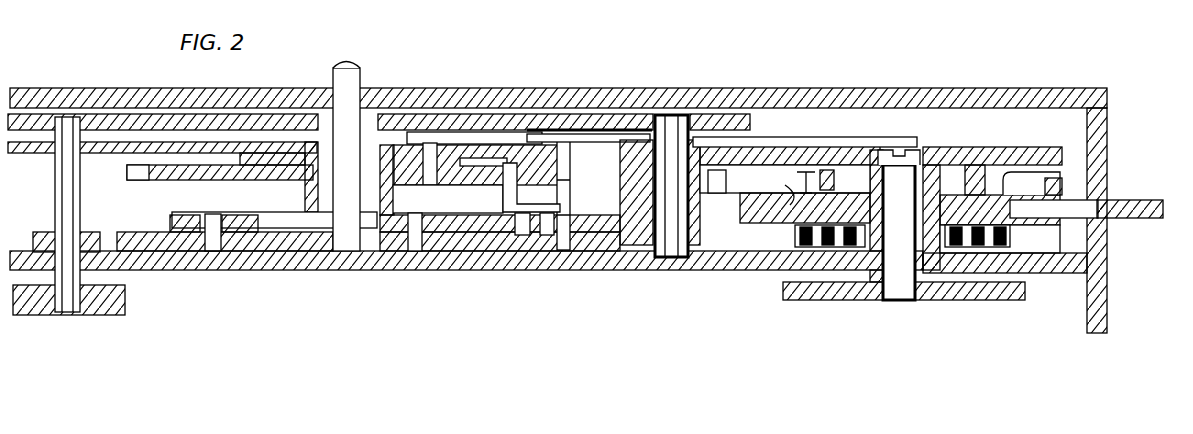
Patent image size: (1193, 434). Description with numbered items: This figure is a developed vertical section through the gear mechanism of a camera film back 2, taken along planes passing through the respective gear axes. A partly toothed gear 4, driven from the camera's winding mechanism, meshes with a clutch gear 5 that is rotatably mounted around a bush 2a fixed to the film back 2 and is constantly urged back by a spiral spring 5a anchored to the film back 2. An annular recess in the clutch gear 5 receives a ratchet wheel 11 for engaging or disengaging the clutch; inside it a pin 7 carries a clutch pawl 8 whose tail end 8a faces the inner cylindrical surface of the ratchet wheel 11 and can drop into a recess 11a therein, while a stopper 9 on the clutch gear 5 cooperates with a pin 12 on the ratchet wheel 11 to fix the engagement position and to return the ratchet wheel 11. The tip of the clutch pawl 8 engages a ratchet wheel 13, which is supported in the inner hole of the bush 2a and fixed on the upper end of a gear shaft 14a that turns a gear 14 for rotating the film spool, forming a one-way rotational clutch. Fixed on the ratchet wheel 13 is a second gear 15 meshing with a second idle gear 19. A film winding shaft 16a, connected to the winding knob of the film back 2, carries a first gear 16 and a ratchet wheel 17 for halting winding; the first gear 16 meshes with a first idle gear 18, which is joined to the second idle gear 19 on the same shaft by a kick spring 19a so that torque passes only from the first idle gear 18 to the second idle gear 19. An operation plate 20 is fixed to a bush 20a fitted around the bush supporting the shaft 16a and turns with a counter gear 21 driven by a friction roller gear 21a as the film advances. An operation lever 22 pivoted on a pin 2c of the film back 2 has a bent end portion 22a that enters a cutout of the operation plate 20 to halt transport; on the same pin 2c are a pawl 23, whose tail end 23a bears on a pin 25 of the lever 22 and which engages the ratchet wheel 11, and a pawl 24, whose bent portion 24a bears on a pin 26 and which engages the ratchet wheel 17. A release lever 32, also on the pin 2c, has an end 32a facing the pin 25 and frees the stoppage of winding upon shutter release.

The film back 2 is at (1102, 261).
The bush 2a is at (873, 283).
The pin 2c is at (617, 225).
The partly toothed gear 4 is at (1133, 200).
The clutch gear 5 is at (1058, 217).
The spiral spring 5a is at (1010, 242).
The pin 7 is at (806, 170).
The clutch pawl 8 is at (836, 170).
The tail end 8a is at (790, 203).
The stopper 9 is at (1031, 172).
The ratchet wheel 11 is at (1106, 160).
The recess 11a is at (780, 250).
The pin 12 is at (1077, 177).
The ratchet wheel 13 is at (975, 168).
The gear 14 is at (950, 299).
The gear shaft 14a is at (897, 283).
The second gear 15 is at (1015, 150).
The first gear 16 is at (147, 256).
The film winding shaft 16a is at (326, 111).
The ratchet wheel 17 is at (197, 256).
The first idle gear 18 is at (728, 257).
The second idle gear 19 is at (733, 147).
The kick spring 19a is at (699, 258).
The operation plate 20 is at (184, 180).
The bush 20a is at (137, 180).
The counter gear 21 is at (186, 160).
The friction roller gear 21a is at (33, 156).
The operation lever 22 is at (578, 226).
The bent end portion 22a is at (448, 199).
The pawl 23 is at (724, 173).
The tail end 23a is at (556, 172).
The pawl 24 is at (562, 225).
The bent portion 24a is at (523, 222).
The pin 25 is at (546, 160).
The pin 26 is at (546, 222).
The release lever 32 is at (868, 145).
The end 32a is at (552, 148).